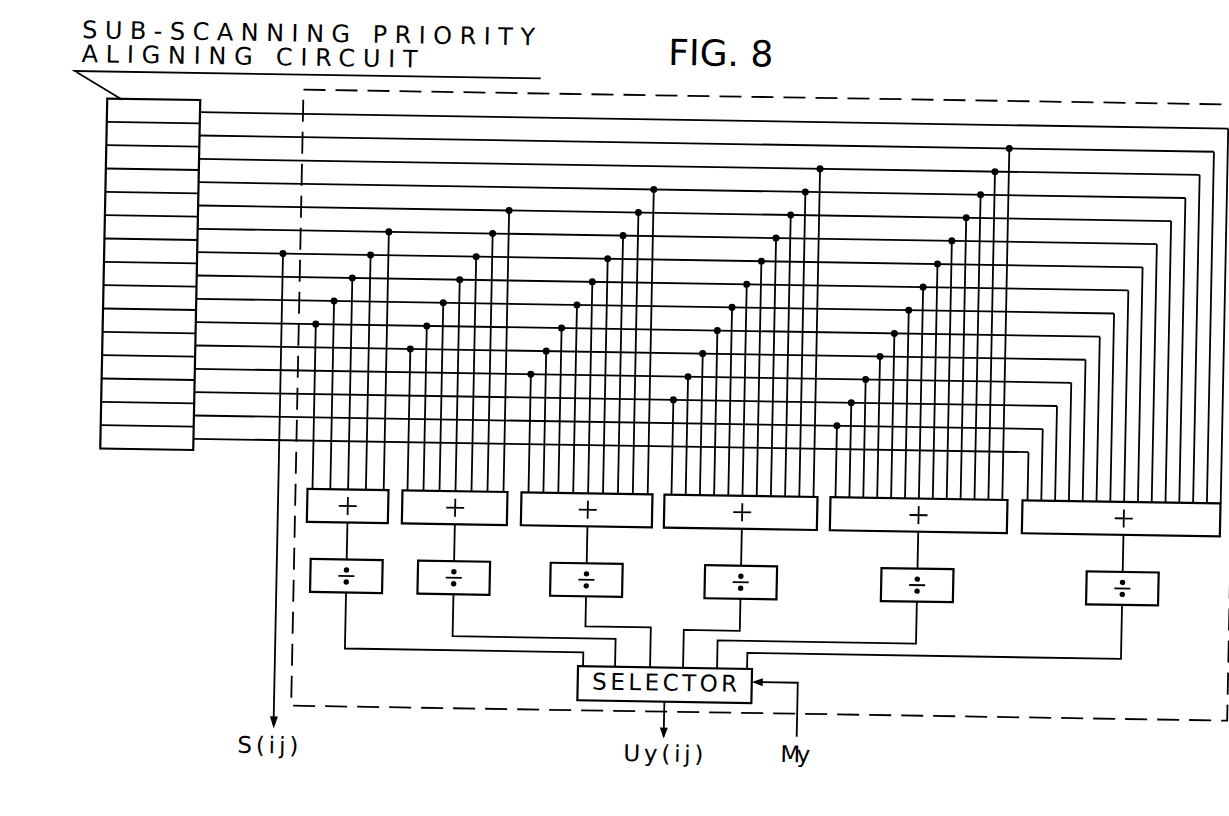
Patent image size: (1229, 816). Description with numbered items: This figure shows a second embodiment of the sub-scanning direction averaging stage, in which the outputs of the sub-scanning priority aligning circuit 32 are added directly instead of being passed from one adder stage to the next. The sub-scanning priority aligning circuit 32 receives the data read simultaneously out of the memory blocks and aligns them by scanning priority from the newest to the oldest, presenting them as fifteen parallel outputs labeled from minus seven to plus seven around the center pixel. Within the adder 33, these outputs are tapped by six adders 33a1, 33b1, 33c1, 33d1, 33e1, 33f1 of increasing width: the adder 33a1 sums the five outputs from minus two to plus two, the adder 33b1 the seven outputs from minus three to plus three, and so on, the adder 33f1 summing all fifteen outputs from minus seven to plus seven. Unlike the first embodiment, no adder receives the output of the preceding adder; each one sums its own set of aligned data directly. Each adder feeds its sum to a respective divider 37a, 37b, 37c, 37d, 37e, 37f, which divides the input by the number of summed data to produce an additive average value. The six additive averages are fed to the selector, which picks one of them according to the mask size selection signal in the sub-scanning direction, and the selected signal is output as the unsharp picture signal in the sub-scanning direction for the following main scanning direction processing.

The sub-scanning priority aligning circuit 32 is at (122, 451).
The adder 33 is at (1210, 705).
The adder 33a1 is at (393, 520).
The adder 33b1 is at (512, 520).
The adder 33c1 is at (628, 520).
The adder 33d1 is at (822, 520).
The adder 33e1 is at (968, 520).
The adder 33f1 is at (1157, 520).
The divider 37a is at (376, 590).
The divider 37b is at (492, 590).
The divider 37c is at (632, 566).
The divider 37d is at (786, 583).
The divider 37e is at (962, 580).
The divider 37f is at (1168, 578).